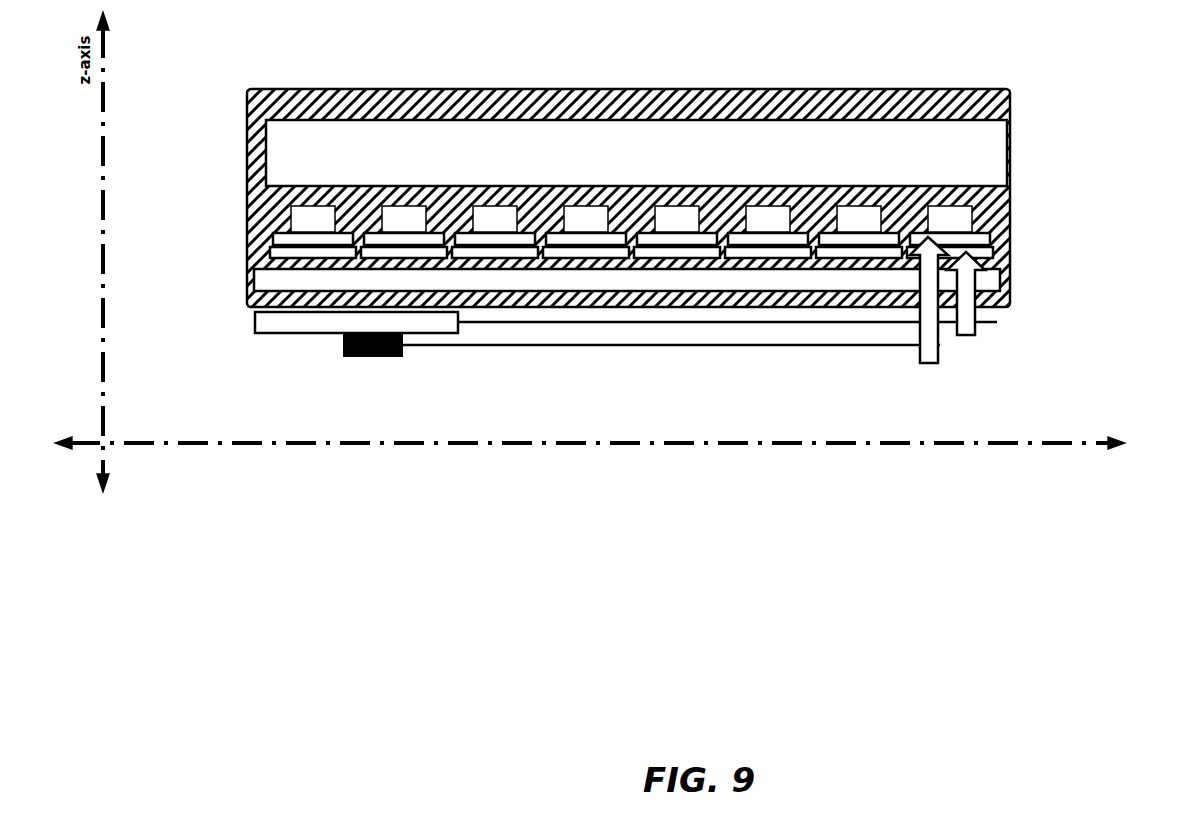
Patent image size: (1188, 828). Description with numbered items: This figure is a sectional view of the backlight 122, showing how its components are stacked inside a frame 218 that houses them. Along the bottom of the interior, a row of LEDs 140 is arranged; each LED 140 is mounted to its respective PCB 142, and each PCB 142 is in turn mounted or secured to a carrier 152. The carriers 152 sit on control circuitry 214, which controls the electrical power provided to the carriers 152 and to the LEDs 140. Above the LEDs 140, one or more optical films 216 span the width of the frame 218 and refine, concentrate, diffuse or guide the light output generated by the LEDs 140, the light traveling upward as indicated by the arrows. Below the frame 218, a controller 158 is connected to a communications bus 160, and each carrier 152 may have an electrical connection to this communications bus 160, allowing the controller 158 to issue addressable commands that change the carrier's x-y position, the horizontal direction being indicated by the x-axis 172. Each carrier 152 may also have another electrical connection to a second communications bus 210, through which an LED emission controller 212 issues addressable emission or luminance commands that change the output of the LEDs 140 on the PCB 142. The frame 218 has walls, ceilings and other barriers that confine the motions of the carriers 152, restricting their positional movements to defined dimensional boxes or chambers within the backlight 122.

The backlight 122 is at (205, 641).
The LED 140 is at (1027, 198).
The PCB 142 is at (273, 243).
The carrier 152 is at (1008, 254).
The controller 158 is at (255, 322).
The communications bus 160 is at (998, 325).
The x-axis 172 is at (1083, 473).
The communications bus 210 is at (687, 347).
The LED emission controller 212 is at (343, 345).
The control circuitry 214 is at (254, 280).
The optical films 216 is at (1010, 152).
The frame 218 is at (247, 134).